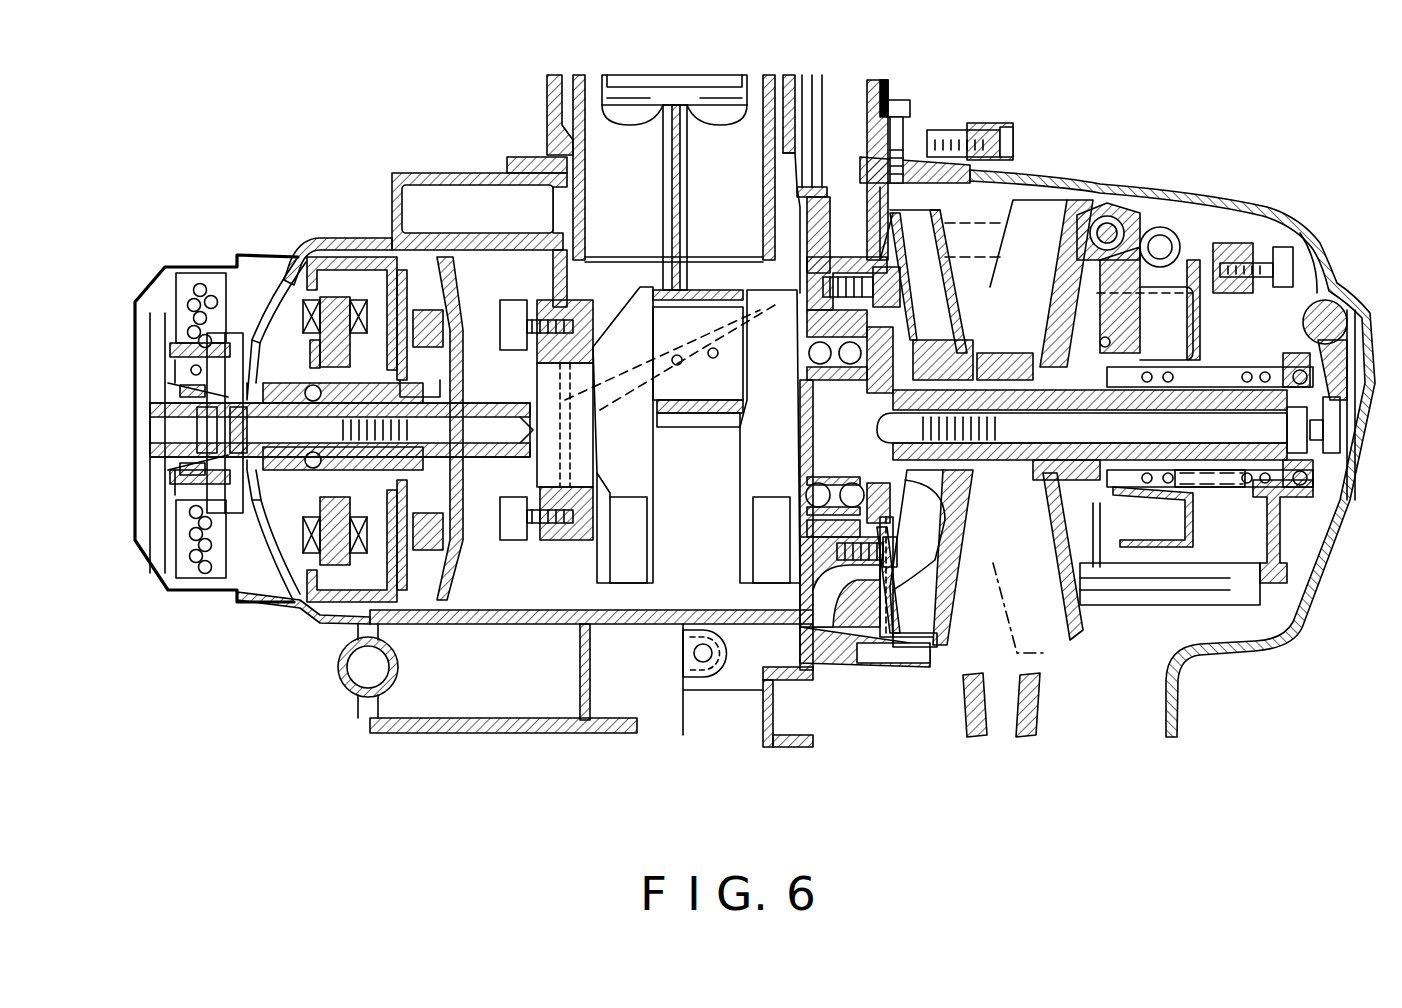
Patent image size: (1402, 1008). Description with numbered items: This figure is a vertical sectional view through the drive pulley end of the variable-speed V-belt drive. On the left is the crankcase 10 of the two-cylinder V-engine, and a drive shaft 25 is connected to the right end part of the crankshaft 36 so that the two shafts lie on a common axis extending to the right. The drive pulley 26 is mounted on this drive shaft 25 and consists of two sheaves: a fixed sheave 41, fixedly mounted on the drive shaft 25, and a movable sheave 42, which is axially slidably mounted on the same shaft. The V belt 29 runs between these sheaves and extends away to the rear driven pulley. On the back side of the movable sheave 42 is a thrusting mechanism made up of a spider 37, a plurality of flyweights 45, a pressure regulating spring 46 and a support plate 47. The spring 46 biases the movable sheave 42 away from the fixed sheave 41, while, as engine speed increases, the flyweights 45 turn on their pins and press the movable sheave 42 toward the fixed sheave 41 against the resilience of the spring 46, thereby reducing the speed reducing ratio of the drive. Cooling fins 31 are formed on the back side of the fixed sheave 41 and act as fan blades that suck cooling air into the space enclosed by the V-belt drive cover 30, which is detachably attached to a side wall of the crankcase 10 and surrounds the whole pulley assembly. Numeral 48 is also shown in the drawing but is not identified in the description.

The crankcase 10 is at (632, 623).
The drive shaft 25 is at (1010, 467).
The drive pulley 26 is at (1061, 201).
The V belt 29 is at (965, 233).
The V-belt drive cover 30 is at (1290, 210).
The cooling fins 31 is at (915, 627).
The crankshaft 36 is at (813, 447).
The spider 37 is at (1193, 300).
The fixed sheave 41 is at (943, 603).
The movable sheave 42 is at (1067, 640).
The flyweights 45 is at (1127, 300).
The pressure regulating spring 46 is at (1210, 480).
The support plate 47 is at (1277, 543).
The bearing 48 is at (1160, 247).